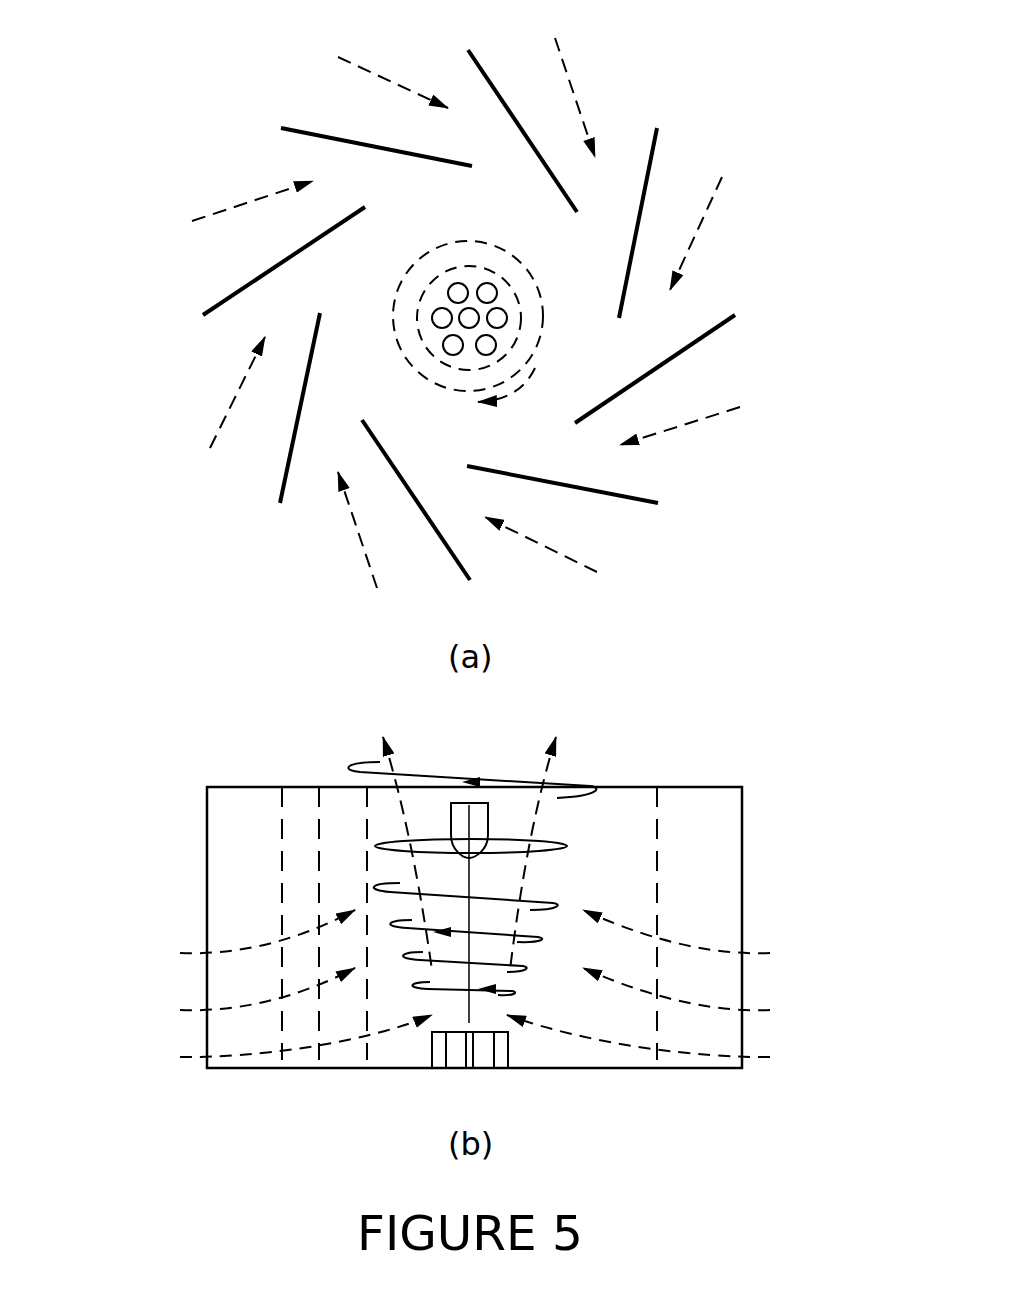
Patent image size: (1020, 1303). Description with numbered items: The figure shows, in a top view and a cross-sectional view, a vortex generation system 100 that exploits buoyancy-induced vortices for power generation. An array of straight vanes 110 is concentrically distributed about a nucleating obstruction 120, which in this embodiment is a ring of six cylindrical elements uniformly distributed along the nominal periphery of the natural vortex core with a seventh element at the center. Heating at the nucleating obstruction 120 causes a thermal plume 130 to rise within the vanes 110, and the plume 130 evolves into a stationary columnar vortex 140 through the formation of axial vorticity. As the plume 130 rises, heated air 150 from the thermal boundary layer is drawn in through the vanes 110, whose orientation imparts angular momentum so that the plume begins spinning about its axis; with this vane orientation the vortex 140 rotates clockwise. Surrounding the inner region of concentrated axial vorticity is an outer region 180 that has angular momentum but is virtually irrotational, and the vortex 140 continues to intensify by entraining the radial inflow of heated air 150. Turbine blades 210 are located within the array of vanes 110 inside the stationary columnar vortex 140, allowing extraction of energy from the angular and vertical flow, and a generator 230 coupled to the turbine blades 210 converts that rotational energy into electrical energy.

The vortex generation system 100 is at (279, 52).
The vanes 110 is at (327, 137).
The nucleating obstruction 120 is at (468, 358).
The thermal plume 130 is at (407, 822).
The stationary columnar vortex 140 is at (474, 218).
The air 150 is at (337, 57).
The outer region 180 is at (247, 950).
The turbine blades 210 is at (533, 840).
The generator 230 is at (457, 805).